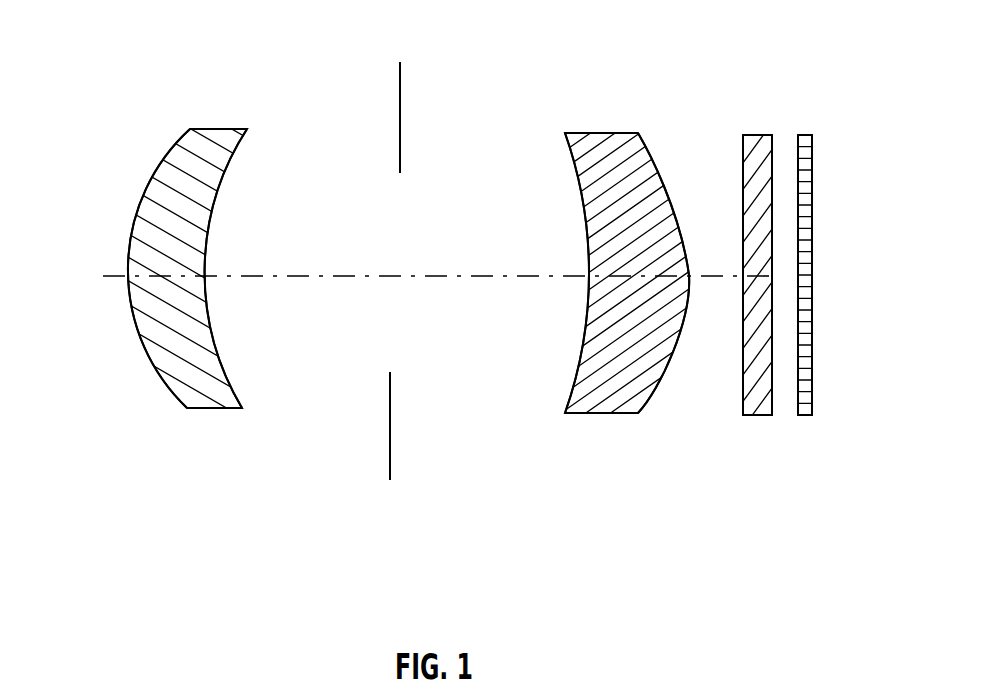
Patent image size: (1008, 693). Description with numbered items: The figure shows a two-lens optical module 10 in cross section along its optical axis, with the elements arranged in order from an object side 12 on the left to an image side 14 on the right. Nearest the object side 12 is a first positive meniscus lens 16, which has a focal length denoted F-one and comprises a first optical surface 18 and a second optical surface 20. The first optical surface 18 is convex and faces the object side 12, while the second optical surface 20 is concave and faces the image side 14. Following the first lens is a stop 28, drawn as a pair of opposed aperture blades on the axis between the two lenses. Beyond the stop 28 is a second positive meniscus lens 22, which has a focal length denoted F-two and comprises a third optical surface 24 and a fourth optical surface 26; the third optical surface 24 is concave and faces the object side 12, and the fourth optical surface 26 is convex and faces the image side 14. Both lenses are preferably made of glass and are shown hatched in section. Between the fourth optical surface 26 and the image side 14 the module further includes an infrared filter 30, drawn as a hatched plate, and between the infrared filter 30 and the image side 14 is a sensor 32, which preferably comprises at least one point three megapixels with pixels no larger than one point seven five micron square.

The lens optical module 10 is at (217, 82).
The object side 12 is at (199, 256).
The image side 14 is at (831, 312).
The first positive meniscus lens 16 is at (200, 377).
The first optical surface 18 is at (143, 350).
The second optical surface 20 is at (225, 168).
The second positive meniscus lens 22 is at (616, 370).
The third optical surface 24 is at (578, 371).
The fourth optical surface 26 is at (650, 148).
The stop 28 is at (390, 468).
The infrared filter 30 is at (763, 120).
The sensor 32 is at (803, 408).